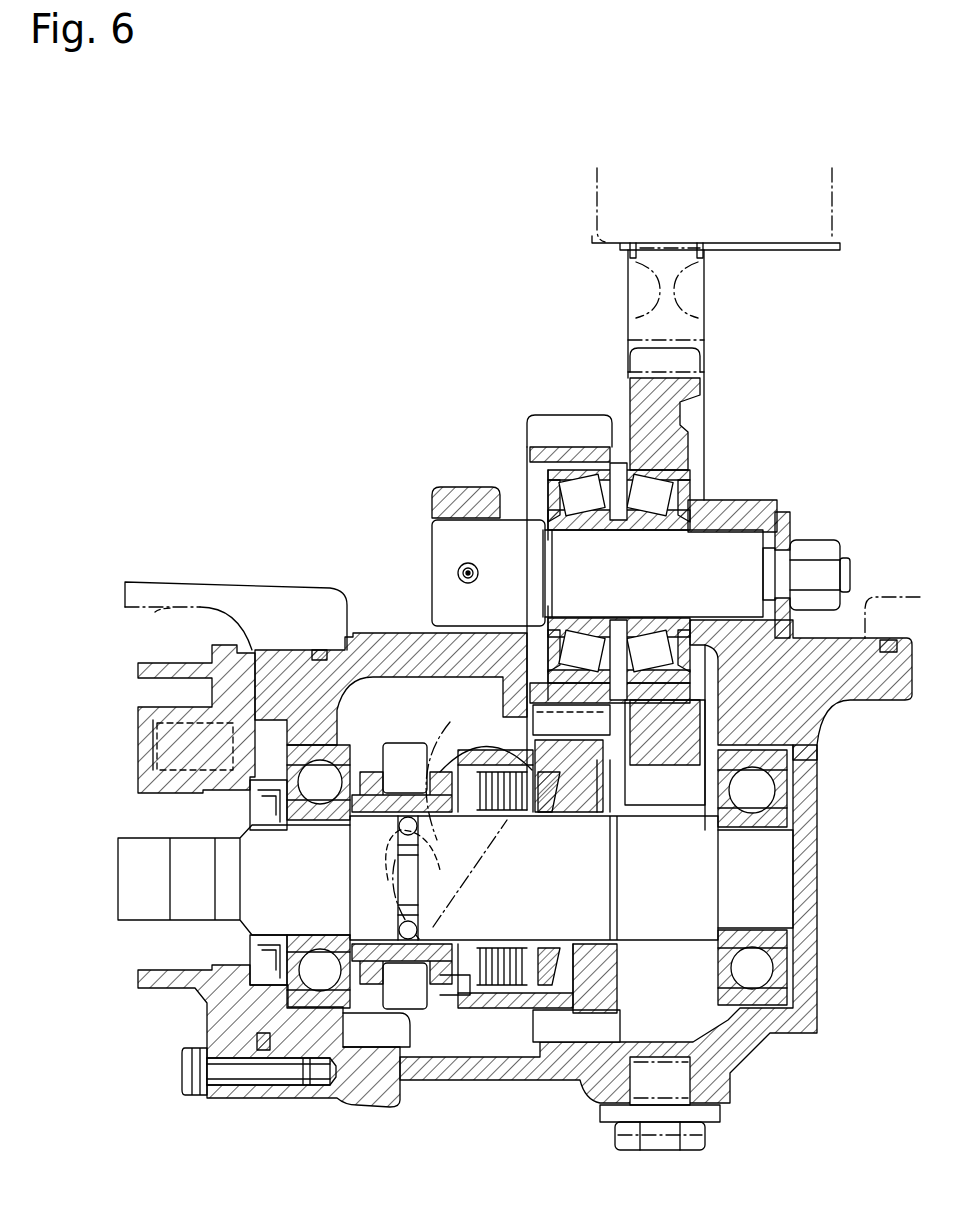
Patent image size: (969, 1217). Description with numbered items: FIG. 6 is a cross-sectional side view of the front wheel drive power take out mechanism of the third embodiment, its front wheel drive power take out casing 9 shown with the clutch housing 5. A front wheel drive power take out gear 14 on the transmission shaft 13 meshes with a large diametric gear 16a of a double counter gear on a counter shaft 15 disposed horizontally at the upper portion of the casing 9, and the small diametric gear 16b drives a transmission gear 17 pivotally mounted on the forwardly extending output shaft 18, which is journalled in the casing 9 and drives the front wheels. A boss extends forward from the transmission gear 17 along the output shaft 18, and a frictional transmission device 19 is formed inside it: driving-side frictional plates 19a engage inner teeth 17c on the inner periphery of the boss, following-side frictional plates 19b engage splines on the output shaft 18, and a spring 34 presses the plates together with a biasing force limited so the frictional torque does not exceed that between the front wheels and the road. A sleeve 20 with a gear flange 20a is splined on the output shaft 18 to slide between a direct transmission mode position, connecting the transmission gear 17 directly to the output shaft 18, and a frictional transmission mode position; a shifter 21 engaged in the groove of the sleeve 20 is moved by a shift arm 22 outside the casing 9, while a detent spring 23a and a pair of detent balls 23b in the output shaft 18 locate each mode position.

The clutch housing 5 is at (188, 624).
The front wheel drive power take out casing 9 is at (452, 486).
The transmission shaft 13 is at (742, 256).
The front wheel drive power take out gear 14 is at (704, 328).
The counter shaft 15 is at (640, 602).
The large diametric gear 16a is at (702, 383).
The small diametric gear 16b is at (570, 412).
The transmission gear 17 is at (614, 1026).
The inner teeth 17c is at (467, 987).
The output shaft 18 is at (672, 900).
The frictional transmission device 19 is at (455, 768).
The driving-side frictional plates 19a is at (512, 990).
The following-side frictional plates 19b is at (520, 950).
The sleeve 20 is at (412, 983).
The gear flange 20a is at (453, 983).
The shifter 21 is at (372, 760).
The shift arm 22 is at (470, 755).
The detent spring 23a is at (425, 905).
The detent balls 23b is at (414, 832).
The spring 34 is at (563, 990).